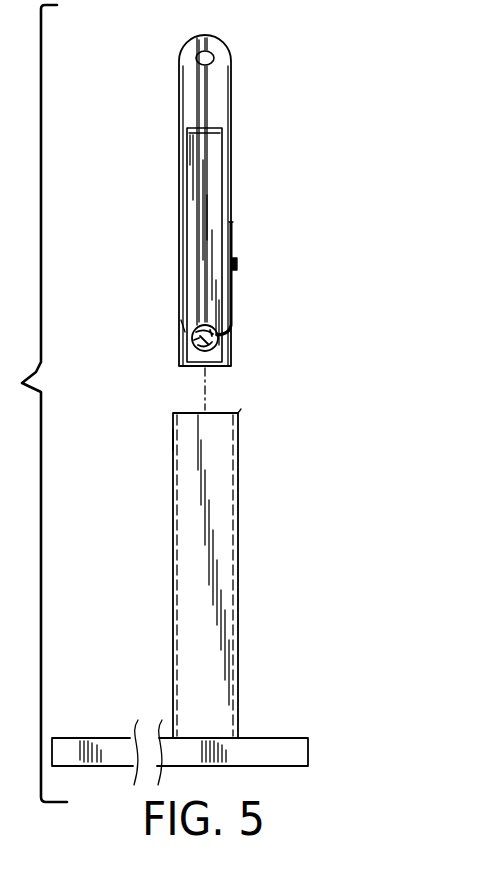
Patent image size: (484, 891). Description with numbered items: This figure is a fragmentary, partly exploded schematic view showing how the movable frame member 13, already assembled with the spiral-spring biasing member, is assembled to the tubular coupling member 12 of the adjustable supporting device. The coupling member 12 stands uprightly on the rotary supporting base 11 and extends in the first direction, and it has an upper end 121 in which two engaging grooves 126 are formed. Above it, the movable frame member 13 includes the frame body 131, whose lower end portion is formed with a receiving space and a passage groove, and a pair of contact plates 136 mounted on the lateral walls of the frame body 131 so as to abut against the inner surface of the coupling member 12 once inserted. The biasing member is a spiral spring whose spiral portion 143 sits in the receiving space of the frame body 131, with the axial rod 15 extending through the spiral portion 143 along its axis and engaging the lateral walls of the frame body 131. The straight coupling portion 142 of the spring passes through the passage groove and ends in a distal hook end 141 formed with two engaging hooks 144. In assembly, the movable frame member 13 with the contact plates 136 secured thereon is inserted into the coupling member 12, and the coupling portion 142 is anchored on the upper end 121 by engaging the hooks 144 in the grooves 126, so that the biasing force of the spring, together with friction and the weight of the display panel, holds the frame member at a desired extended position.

The rotary supporting base 11 is at (268, 738).
The tubular coupling member 12 is at (248, 576).
The upper end 121 is at (172, 441).
The engaging grooves 126 is at (238, 413).
The movable frame member 13 is at (250, 112).
The frame body 131 is at (232, 151).
The contact plates 136 is at (205, 200).
The distal hook end 141 is at (232, 258).
The coupling portion 142 is at (232, 296).
The spiral portion 143 is at (195, 343).
The engaging hooks 144 is at (238, 266).
The axial rod 15 is at (178, 326).